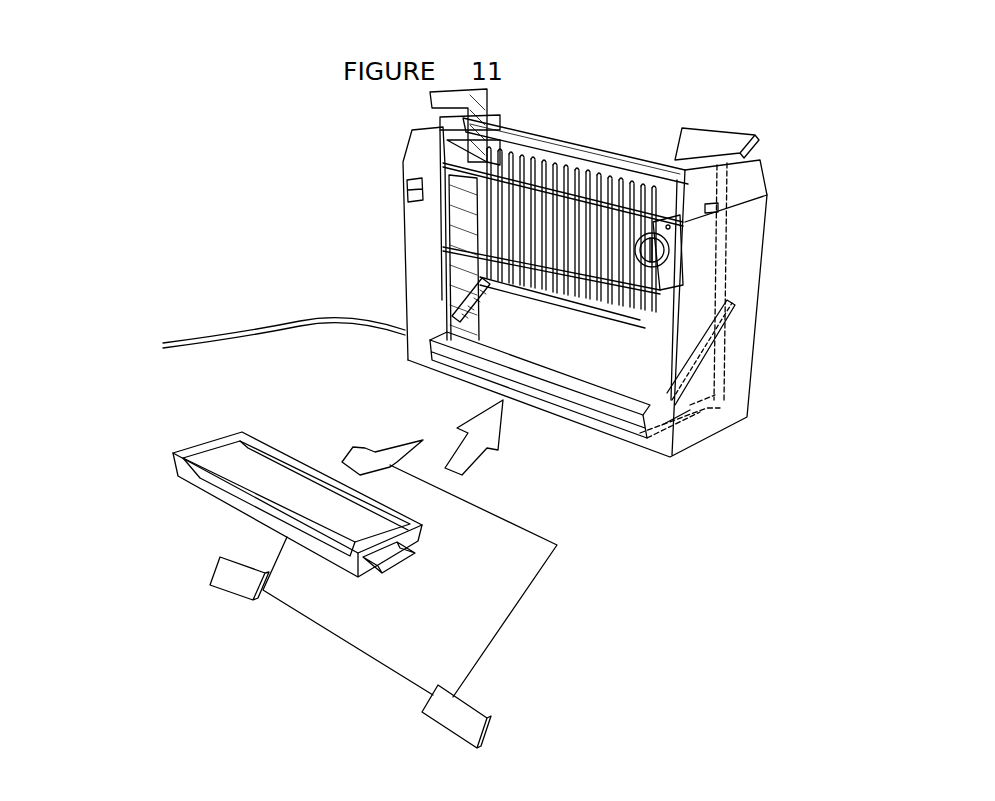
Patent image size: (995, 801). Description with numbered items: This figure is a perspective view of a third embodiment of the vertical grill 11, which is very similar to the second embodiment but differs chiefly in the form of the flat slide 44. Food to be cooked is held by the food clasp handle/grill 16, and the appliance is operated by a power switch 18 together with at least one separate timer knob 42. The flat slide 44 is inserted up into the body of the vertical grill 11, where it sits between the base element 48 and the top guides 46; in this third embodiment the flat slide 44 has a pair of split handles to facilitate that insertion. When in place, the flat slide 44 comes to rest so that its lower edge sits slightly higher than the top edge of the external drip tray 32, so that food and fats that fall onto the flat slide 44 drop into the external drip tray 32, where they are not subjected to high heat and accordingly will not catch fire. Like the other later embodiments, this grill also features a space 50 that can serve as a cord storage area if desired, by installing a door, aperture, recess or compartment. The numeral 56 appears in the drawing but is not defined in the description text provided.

The vertical grill 11 is at (190, 249).
The food clasp handle/grill 16 is at (733, 132).
The power switch 18 is at (398, 183).
The external drip tray 32 is at (227, 467).
The timer knob 42 is at (670, 243).
The flat slide 44 is at (358, 608).
The top guides 46 is at (642, 377).
The base element 48 is at (702, 350).
The space for cord storage area 50 is at (687, 403).
The feet 56 is at (233, 572).